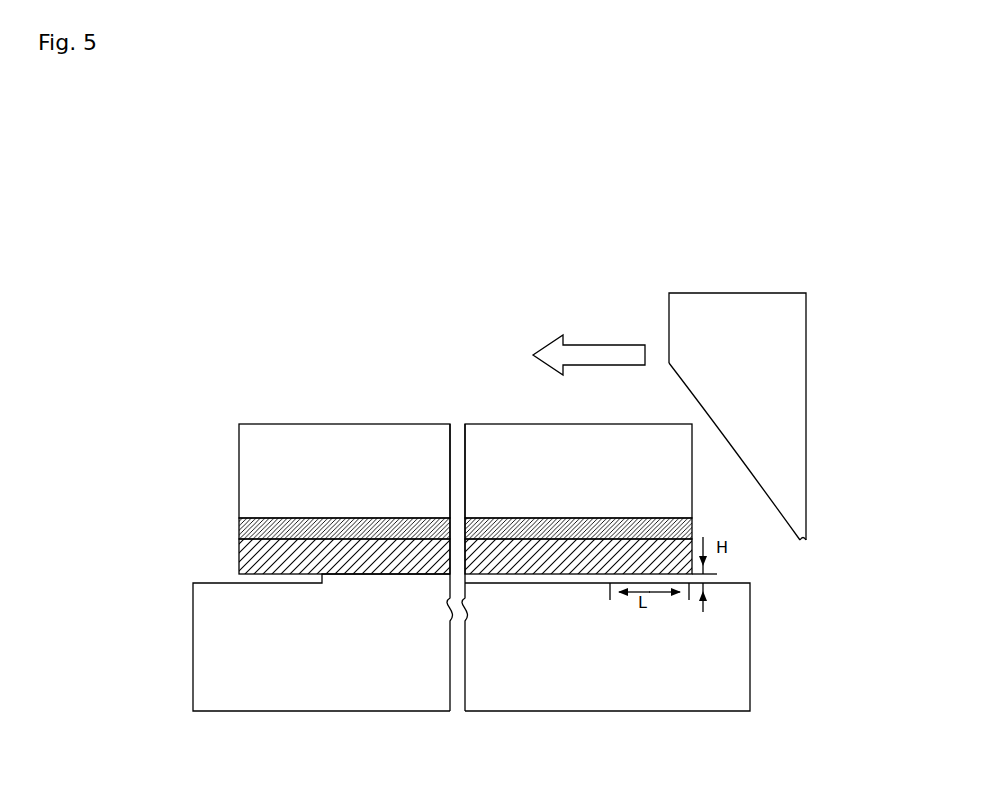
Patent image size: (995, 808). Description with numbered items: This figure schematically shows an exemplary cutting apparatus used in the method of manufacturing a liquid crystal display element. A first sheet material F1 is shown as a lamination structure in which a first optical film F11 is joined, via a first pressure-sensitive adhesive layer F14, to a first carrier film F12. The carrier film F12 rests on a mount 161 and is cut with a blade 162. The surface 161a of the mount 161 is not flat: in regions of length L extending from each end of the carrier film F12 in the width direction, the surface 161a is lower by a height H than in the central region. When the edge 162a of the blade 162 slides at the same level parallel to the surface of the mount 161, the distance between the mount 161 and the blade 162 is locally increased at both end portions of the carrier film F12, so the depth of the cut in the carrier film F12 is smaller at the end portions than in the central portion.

The first sheet material F1 is at (420, 441).
The first optical film F11 is at (239, 493).
The first pressure-sensitive adhesive layer F14 is at (239, 523).
The first carrier film F12 is at (239, 567).
The mount 161 is at (517, 642).
The surface of the mount 161a is at (733, 581).
The blade 162 is at (766, 397).
The edge of the blade 162a is at (806, 540).